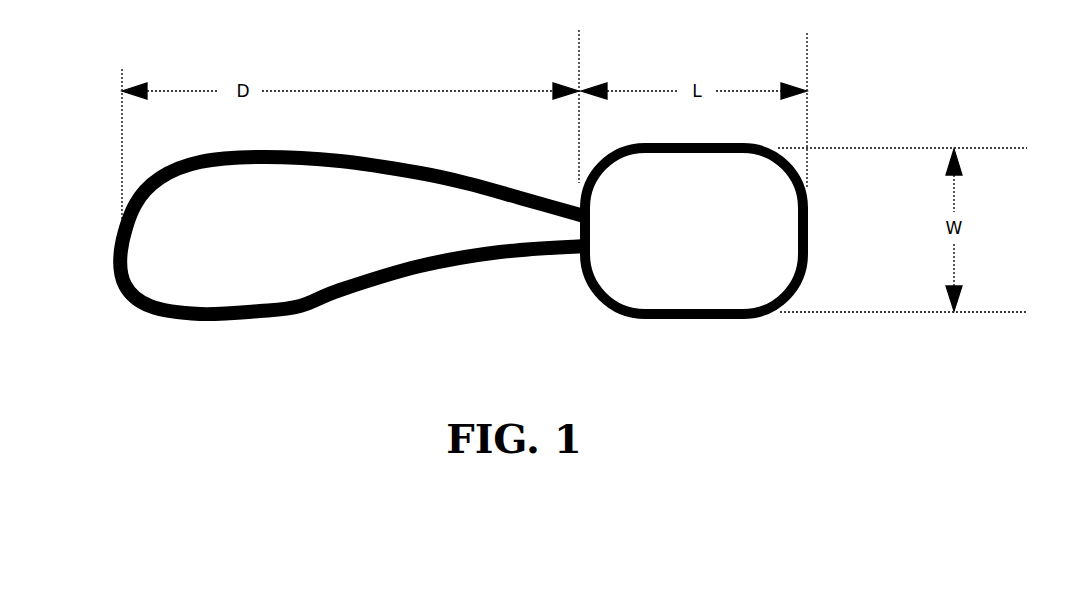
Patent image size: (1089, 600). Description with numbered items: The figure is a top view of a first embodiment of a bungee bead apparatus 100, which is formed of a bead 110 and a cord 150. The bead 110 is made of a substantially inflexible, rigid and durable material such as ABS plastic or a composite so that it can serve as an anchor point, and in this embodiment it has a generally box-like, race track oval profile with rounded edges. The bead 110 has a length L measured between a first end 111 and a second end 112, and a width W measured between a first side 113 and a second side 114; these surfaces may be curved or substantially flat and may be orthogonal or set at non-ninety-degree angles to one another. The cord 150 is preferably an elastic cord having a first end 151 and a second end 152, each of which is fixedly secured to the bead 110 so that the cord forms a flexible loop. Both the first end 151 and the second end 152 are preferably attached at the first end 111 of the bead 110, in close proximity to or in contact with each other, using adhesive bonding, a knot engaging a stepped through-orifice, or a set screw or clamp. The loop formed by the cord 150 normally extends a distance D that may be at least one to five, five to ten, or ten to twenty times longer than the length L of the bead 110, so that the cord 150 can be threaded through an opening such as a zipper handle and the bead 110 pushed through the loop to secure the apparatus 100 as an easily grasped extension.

The bungee bead apparatus 100 is at (692, 333).
The bead 110 is at (814, 237).
The first end of the bead 111 is at (578, 93).
The second end of the bead 112 is at (808, 96).
The first side of the bead 113 is at (924, 312).
The second side of the bead 114 is at (923, 148).
The cord 150 is at (120, 278).
The first end of the cord 151 is at (575, 258).
The second end of the cord 152 is at (576, 205).